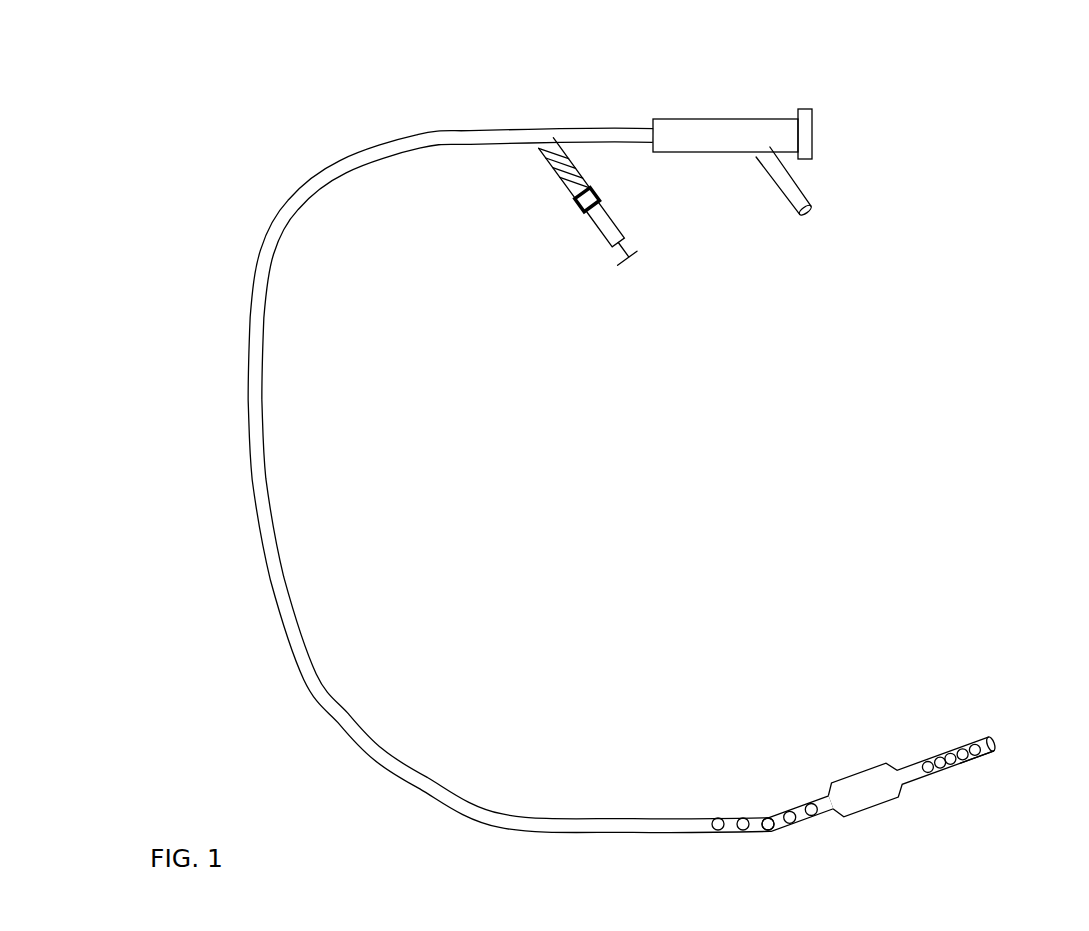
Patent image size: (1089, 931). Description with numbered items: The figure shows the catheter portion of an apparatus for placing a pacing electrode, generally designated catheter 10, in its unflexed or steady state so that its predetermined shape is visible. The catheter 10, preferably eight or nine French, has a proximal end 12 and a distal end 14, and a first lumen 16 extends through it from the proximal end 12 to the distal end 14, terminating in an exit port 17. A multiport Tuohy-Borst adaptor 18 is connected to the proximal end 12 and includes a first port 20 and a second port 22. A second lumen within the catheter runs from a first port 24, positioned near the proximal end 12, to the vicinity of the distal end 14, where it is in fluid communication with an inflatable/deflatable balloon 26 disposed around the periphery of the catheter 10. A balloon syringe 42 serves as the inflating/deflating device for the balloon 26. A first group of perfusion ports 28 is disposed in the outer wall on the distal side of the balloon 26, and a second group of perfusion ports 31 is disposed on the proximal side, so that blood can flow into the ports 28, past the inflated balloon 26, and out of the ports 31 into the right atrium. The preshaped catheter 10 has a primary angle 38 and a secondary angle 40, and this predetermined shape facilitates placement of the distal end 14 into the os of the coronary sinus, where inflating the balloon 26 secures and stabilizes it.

The catheter 10 is at (236, 661).
The proximal end 12 is at (671, 100).
The distal end 14 is at (932, 802).
The first lumen 16 is at (992, 752).
The exit port 17 is at (993, 752).
The Tuohy-Borst adaptor 18 is at (743, 119).
The first port 20 is at (813, 130).
The second port 22 is at (810, 215).
The first port 24 is at (550, 163).
The inflatable/deflatable balloon 26 is at (860, 770).
The first group of perfusion ports 28 is at (958, 743).
The second group of perfusion ports 31 is at (768, 832).
The primary angle 38 is at (400, 772).
The secondary angle 40 is at (775, 815).
The balloon syringe 42 is at (600, 228).